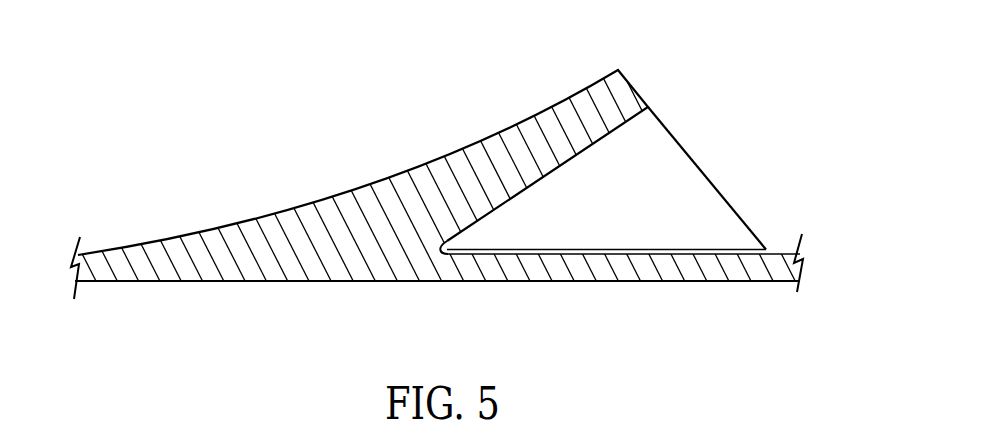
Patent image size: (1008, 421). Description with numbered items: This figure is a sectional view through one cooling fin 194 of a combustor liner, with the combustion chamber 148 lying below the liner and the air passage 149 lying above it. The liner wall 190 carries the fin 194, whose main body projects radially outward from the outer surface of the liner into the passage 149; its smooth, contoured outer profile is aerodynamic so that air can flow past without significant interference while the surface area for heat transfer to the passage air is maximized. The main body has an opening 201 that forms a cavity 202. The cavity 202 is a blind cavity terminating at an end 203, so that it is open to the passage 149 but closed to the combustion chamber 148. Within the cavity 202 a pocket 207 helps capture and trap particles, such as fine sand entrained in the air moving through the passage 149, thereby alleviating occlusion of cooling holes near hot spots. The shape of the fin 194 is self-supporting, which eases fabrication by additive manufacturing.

The combustion chamber 148 is at (718, 353).
The passage 149 is at (682, 29).
The hatched body / ramp structure 190 is at (170, 240).
The cooling fin 194 is at (487, 138).
The opening 201 is at (703, 178).
The cavity 202 is at (650, 218).
The end 203 is at (465, 252).
The pocket 207 is at (668, 250).